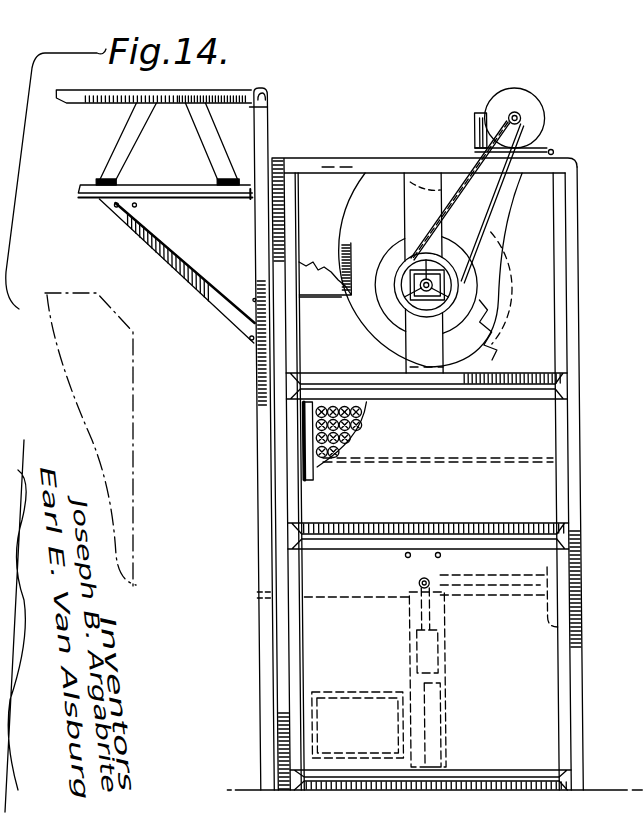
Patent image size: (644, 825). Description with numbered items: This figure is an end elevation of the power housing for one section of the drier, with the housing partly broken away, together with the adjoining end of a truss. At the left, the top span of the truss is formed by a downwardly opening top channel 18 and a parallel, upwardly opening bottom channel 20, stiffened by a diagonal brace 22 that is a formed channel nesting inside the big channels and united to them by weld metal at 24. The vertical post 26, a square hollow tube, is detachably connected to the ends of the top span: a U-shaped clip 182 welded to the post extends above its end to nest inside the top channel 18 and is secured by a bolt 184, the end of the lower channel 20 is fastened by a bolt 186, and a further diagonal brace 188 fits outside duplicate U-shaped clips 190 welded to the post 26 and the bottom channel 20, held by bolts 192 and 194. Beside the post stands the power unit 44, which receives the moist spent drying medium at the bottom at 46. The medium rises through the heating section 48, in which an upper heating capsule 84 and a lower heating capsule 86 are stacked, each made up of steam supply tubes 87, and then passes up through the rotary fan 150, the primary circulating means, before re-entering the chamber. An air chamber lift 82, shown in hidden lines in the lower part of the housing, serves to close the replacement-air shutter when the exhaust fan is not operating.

The top channel 18 is at (245, 89).
The bottom channel 20 is at (144, 192).
The diagonal brace 22 is at (126, 138).
The weld joint 24 is at (98, 181).
The vertical post 26 is at (249, 130).
The power unit 44 is at (388, 152).
The return inlet 46 is at (260, 728).
The heating section 48 is at (581, 471).
The air chamber lift 82 is at (447, 663).
The upper heating capsule 84 is at (318, 446).
The lower heating capsule 86 is at (305, 470).
The steam supply tubes 87 is at (316, 435).
The rotary fan 150 is at (498, 308).
The U-shaped clip 182 is at (258, 108).
The bolt 184 is at (266, 86).
The bolt 186 is at (251, 199).
The diagonal brace 188 is at (178, 258).
The U-shaped clips 190 is at (137, 206).
The bolt 192 is at (115, 206).
The bolt 194 is at (252, 333).